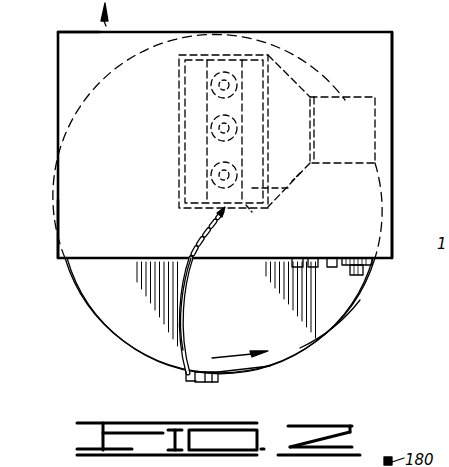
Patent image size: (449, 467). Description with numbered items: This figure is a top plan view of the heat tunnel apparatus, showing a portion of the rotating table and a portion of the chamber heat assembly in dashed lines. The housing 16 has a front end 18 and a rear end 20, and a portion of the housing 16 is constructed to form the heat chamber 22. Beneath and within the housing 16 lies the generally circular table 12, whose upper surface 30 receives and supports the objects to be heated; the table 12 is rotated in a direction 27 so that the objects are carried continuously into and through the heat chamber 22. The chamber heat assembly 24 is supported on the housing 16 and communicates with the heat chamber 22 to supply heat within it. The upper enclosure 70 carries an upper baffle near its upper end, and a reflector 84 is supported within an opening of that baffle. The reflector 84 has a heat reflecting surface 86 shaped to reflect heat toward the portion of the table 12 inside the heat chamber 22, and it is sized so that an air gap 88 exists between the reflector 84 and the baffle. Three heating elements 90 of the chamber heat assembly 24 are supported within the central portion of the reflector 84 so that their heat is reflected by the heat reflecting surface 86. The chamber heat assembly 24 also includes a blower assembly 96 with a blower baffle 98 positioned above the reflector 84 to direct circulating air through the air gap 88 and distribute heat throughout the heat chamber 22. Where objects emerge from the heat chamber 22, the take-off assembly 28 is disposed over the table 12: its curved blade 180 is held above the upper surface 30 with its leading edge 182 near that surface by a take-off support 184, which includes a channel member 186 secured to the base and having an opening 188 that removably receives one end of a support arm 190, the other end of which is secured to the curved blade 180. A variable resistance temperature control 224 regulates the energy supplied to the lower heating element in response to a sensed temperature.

The table 12 is at (340, 305).
The housing 16 is at (395, 40).
The front end 18 is at (58, 262).
The rear end 20 is at (190, 31).
The heat chamber 22 is at (94, 184).
The chamber heat assembly 24 is at (236, 56).
The direction 27 is at (236, 358).
The take-off assembly 28 is at (202, 288).
The upper surface 30 is at (322, 318).
The upper enclosure 70 is at (60, 31).
The reflector 84 is at (188, 163).
The heat reflecting surface 86 is at (290, 188).
The air gap 88 is at (248, 208).
The heating elements 90 is at (216, 88).
The blower assembly 96 is at (352, 97).
The blower baffle 98 is at (302, 171).
The curved blade 180 is at (181, 309).
The leading edge 182 is at (187, 283).
The take-off support 184 is at (221, 387).
The channel member 186 is at (192, 384).
The opening 188 is at (203, 386).
The support arm 190 is at (221, 381).
The variable resistance temperature control 224 is at (388, 273).